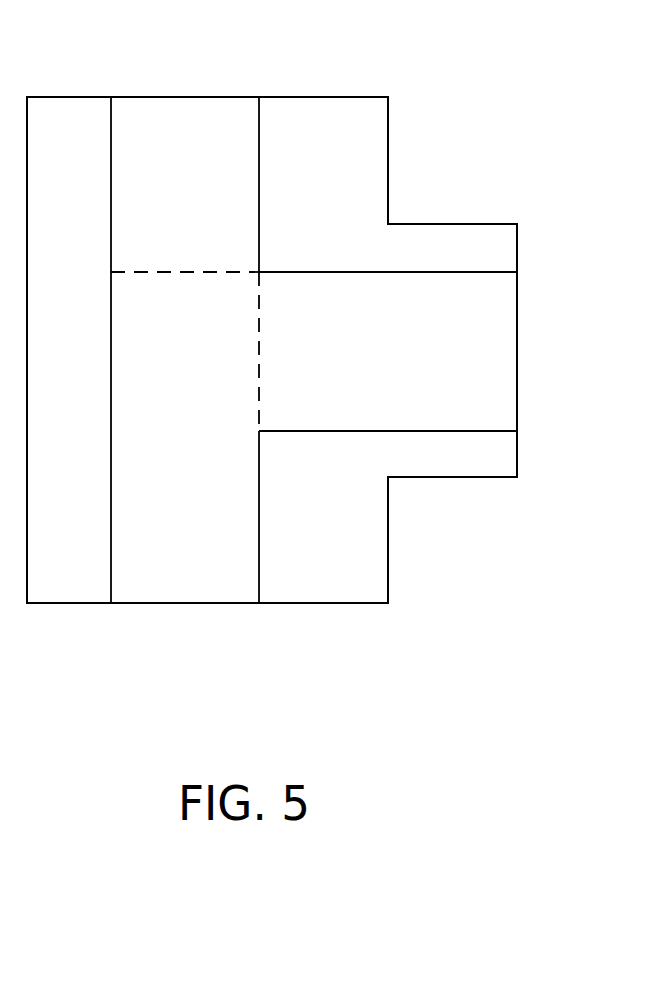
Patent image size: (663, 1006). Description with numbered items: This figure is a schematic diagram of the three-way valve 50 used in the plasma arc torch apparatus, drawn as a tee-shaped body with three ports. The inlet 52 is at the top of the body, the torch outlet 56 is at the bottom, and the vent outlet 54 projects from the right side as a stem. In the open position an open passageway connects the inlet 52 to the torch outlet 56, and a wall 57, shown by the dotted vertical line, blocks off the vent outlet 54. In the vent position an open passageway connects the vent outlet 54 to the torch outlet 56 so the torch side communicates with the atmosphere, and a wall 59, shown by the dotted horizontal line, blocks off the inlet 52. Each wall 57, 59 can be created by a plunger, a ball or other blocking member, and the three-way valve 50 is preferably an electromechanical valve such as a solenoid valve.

The three-way valve 50 is at (463, 143).
The inlet 52 is at (203, 97).
The vent outlet 54 is at (517, 249).
The torch outlet 56 is at (197, 603).
The wall 57 is at (258, 330).
The wall 59 is at (197, 272).